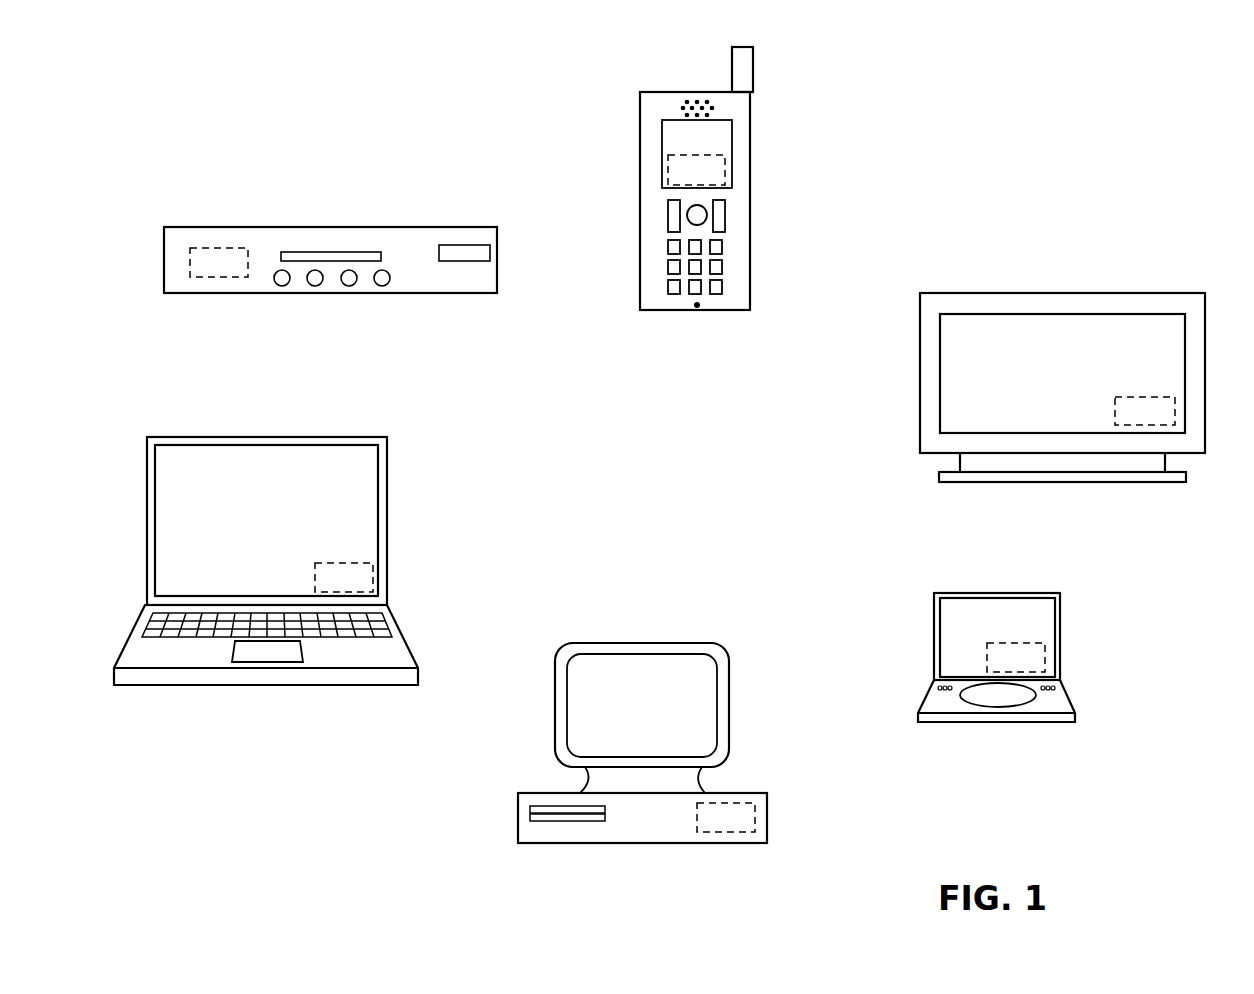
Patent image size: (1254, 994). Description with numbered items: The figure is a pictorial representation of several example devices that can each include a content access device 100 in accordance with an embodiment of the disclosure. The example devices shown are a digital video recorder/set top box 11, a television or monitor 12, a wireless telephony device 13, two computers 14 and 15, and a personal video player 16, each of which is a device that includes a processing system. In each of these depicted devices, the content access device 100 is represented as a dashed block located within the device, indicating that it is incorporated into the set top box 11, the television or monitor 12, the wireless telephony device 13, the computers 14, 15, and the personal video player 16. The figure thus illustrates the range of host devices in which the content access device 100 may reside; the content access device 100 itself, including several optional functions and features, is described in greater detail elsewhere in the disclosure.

The digital video recorder/set top box 11 is at (478, 288).
The television or monitor 12 is at (974, 336).
The wireless telephony device 13 is at (669, 116).
The computer 14 is at (210, 492).
The computer 15 is at (609, 696).
The personal video player 16 is at (974, 630).
The content access device 100 is at (682, 493).